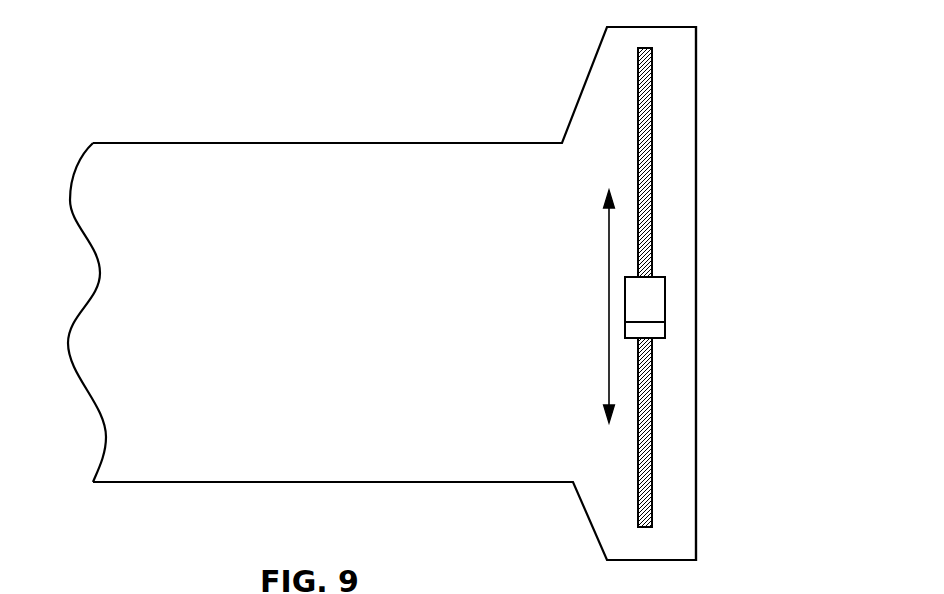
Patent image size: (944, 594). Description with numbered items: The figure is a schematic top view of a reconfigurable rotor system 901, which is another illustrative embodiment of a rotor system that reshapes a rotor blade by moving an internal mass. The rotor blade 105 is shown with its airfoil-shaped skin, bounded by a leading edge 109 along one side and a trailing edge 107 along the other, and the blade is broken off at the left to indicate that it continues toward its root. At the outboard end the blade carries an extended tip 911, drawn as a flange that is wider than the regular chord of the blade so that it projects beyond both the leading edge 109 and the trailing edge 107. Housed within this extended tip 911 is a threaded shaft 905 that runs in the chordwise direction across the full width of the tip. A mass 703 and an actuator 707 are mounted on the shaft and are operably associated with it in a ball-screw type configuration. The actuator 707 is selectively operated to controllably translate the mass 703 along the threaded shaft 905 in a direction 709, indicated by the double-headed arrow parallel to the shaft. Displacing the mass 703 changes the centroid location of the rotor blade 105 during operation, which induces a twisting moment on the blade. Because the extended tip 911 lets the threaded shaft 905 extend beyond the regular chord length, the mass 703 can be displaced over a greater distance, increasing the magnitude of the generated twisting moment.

The reconfigurable rotor system 901 is at (272, 118).
The rotor blade 105 is at (129, 138).
The leading edge 109 is at (435, 143).
The trailing edge 107 is at (396, 482).
The extended tip 911 is at (697, 115).
The threaded shaft 905 is at (653, 421).
The mass 703 is at (666, 290).
The actuator 707 is at (666, 330).
The direction 709 is at (608, 310).